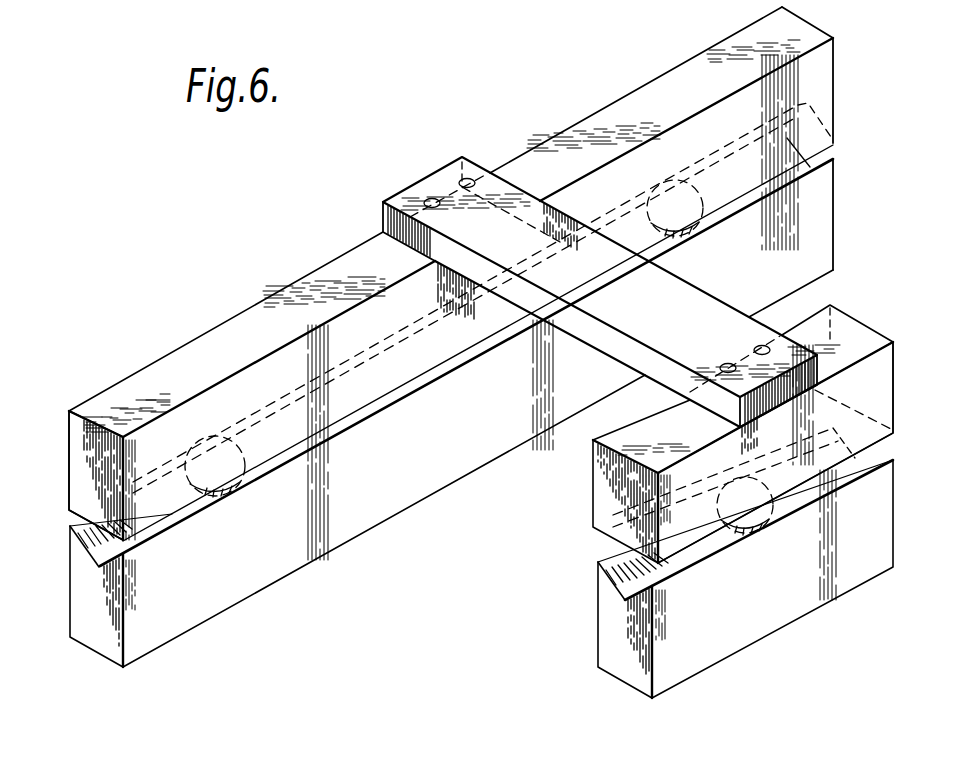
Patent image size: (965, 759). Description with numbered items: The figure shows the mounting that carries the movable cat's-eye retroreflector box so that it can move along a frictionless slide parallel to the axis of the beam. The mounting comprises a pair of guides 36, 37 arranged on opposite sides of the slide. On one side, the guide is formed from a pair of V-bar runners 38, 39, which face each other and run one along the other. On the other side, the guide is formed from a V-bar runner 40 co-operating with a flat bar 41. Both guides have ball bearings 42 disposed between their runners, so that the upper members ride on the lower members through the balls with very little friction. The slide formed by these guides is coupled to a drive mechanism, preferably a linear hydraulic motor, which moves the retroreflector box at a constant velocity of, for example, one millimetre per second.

The guide 36 is at (248, 328).
The guide 37 is at (853, 327).
The V-bar runner 38 is at (156, 370).
The V-bar runner 39 is at (216, 596).
The V-bar runner 40 is at (877, 512).
The flat bar 41 is at (887, 410).
The ball bearings 42 is at (236, 494).